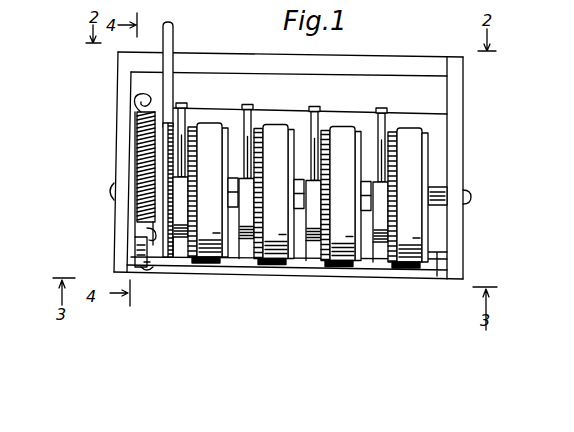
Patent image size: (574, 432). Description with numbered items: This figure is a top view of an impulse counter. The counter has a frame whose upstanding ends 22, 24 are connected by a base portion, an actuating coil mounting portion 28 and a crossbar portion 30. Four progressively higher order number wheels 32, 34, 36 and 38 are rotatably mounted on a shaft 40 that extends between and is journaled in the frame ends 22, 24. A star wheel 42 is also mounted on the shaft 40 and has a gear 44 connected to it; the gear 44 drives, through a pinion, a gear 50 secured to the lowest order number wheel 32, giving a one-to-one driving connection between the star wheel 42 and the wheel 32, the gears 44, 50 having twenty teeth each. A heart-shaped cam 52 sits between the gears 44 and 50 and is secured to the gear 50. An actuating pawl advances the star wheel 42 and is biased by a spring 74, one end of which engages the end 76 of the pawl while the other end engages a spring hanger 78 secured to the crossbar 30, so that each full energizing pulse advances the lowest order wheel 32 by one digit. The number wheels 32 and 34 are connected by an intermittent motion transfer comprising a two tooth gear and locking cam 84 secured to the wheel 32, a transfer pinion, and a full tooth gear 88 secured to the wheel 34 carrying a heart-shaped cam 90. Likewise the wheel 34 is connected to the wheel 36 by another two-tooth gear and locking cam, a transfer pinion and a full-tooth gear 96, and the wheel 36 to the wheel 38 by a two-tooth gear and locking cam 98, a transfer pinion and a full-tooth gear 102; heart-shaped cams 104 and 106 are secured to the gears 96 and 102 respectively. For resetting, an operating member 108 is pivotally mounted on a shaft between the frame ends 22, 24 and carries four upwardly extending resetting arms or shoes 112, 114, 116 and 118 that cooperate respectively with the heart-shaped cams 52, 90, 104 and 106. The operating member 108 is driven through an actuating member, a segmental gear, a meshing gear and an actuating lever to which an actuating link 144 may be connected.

The upstanding end 22 is at (117, 122).
The upstanding end 24 is at (464, 136).
The actuating coil mounting portion 28 is at (396, 57).
The crossbar portion 30 is at (432, 270).
The lowest order number wheel 32 is at (203, 264).
The number wheel 34 is at (262, 265).
The number wheel 36 is at (333, 266).
The number wheel 38 is at (408, 266).
The shaft 40 is at (471, 196).
The star wheel 42 is at (137, 207).
The gear 44 is at (162, 264).
The gear 50 is at (194, 126).
The heart-shaped cam 52 is at (182, 250).
The spring 74 is at (143, 150).
The end 76 is at (138, 97).
The spring hanger 78 is at (148, 273).
The two tooth gear and locking cam 84 is at (223, 264).
The full tooth gear 88 is at (271, 232).
The heart-shaped cam 90 is at (240, 245).
The full-tooth gear 96 is at (352, 171).
The two-tooth gear and locking cam 98 is at (356, 247).
The full-tooth gear 102 is at (449, 175).
The heart-shaped cam 104 is at (311, 250).
The heart-shaped cam 106 is at (374, 255).
The operating member 108 is at (279, 110).
The resetting arm or shoe 112 is at (182, 106).
The resetting arm or shoe 114 is at (261, 127).
The resetting arm or shoe 116 is at (332, 130).
The resetting arm or shoe 118 is at (401, 131).
The actuating link 144 is at (173, 43).